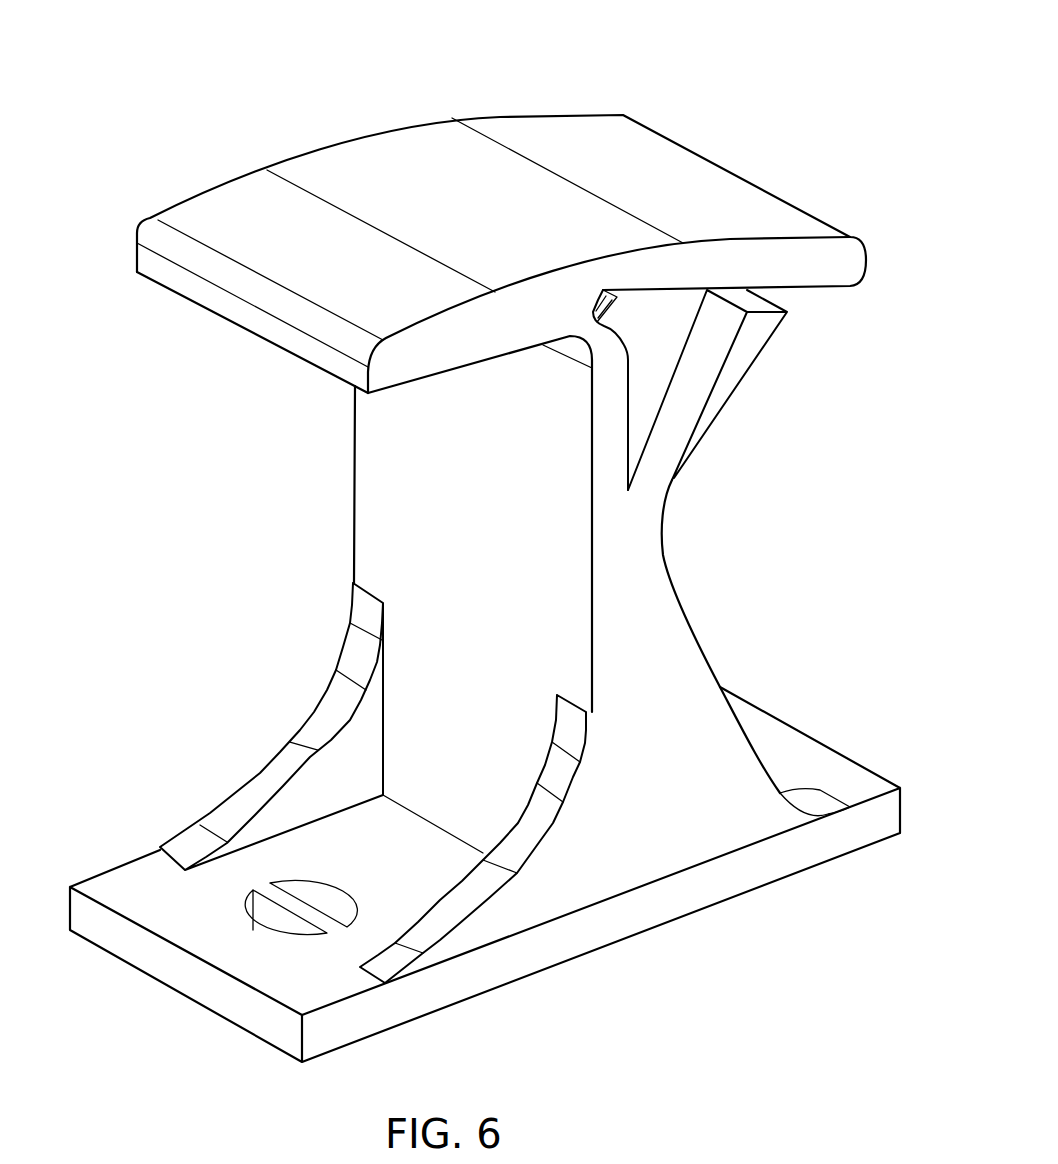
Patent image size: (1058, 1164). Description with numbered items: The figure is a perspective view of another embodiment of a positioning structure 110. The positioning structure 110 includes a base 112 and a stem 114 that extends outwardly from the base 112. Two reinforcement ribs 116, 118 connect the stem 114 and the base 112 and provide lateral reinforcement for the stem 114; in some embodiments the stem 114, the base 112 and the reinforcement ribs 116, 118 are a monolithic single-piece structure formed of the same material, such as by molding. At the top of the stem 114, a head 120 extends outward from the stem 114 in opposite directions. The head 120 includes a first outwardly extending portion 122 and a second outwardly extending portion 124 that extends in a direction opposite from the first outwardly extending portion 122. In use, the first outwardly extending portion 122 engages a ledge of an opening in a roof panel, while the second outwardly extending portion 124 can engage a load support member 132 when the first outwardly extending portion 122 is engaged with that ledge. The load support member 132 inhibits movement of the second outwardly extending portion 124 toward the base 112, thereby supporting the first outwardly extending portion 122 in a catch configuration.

The positioning structure 110 is at (506, 534).
The base 112 is at (812, 742).
The stem 114 is at (660, 537).
The reinforcement rib 116 is at (308, 722).
The reinforcement rib 118 is at (515, 832).
The head 120 is at (501, 199).
The first outwardly extending portion 122 is at (357, 155).
The second outwardly extending portion 124 is at (718, 173).
The load support member 132 is at (730, 396).